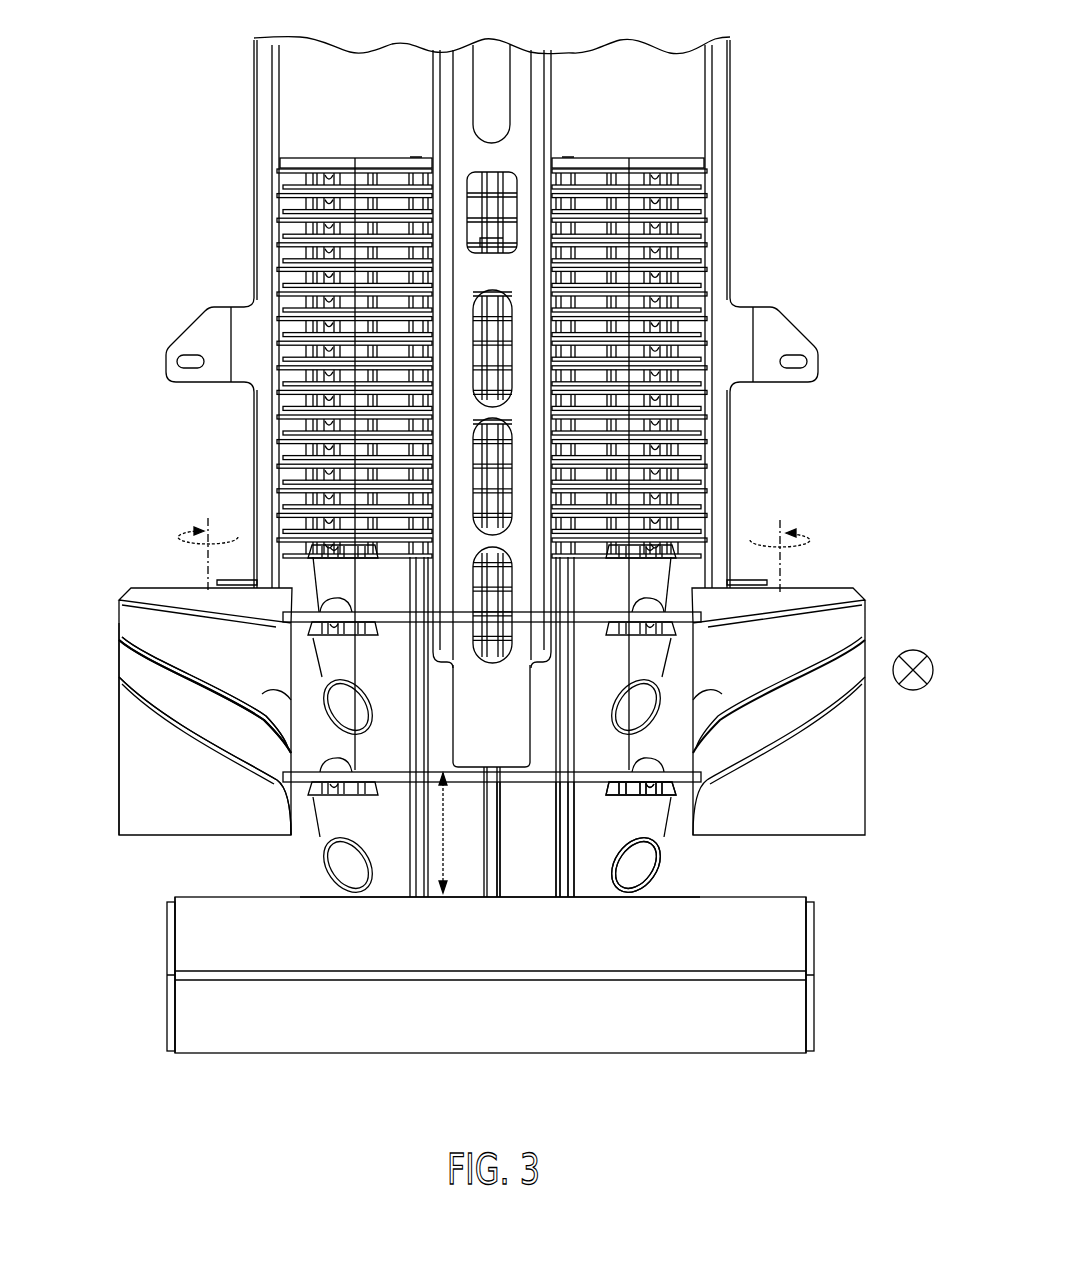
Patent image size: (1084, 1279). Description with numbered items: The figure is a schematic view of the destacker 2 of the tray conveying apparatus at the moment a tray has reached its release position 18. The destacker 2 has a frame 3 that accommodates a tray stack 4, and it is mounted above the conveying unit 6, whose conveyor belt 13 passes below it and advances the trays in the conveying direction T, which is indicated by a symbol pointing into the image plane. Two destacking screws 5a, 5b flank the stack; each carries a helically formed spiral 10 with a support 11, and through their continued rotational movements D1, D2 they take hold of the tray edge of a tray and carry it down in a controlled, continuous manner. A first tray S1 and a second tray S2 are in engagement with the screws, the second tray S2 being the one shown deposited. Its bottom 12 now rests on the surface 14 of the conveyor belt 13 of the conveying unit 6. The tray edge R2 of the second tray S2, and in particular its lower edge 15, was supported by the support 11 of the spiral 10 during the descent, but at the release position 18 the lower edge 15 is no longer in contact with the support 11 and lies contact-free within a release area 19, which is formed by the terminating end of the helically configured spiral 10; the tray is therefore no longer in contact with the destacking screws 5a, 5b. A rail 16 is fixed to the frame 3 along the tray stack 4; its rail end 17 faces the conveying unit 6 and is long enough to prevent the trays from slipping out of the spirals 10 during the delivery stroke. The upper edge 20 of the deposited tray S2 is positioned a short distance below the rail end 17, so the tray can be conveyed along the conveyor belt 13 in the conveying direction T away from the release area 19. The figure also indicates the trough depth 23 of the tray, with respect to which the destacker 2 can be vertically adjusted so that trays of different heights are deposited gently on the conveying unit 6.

The destacker 2 is at (840, 202).
The frame 3 is at (732, 90).
The tray stack 4 is at (597, 155).
The destacking screw 5a is at (182, 711).
The destacking screw 5b is at (835, 819).
The conveying unit 6 is at (541, 980).
The spiral 10 is at (177, 682).
The support 11 is at (120, 693).
The bottom 12 is at (529, 897).
The conveyor belt 13 is at (792, 897).
The surface 14 is at (238, 893).
The lower edge 15 is at (290, 768).
The rail 16 is at (443, 488).
The rail end 17 is at (475, 705).
The release position 18 is at (680, 869).
The release area 19 is at (686, 765).
The upper edge 20 is at (365, 772).
The trough depth 23 is at (443, 850).
The tray edge R2 is at (300, 735).
The first tray S1 is at (613, 676).
The second tray S2 is at (613, 833).
The rotational movement D1 is at (192, 537).
The rotational movement D2 is at (798, 537).
The conveying direction T is at (913, 650).